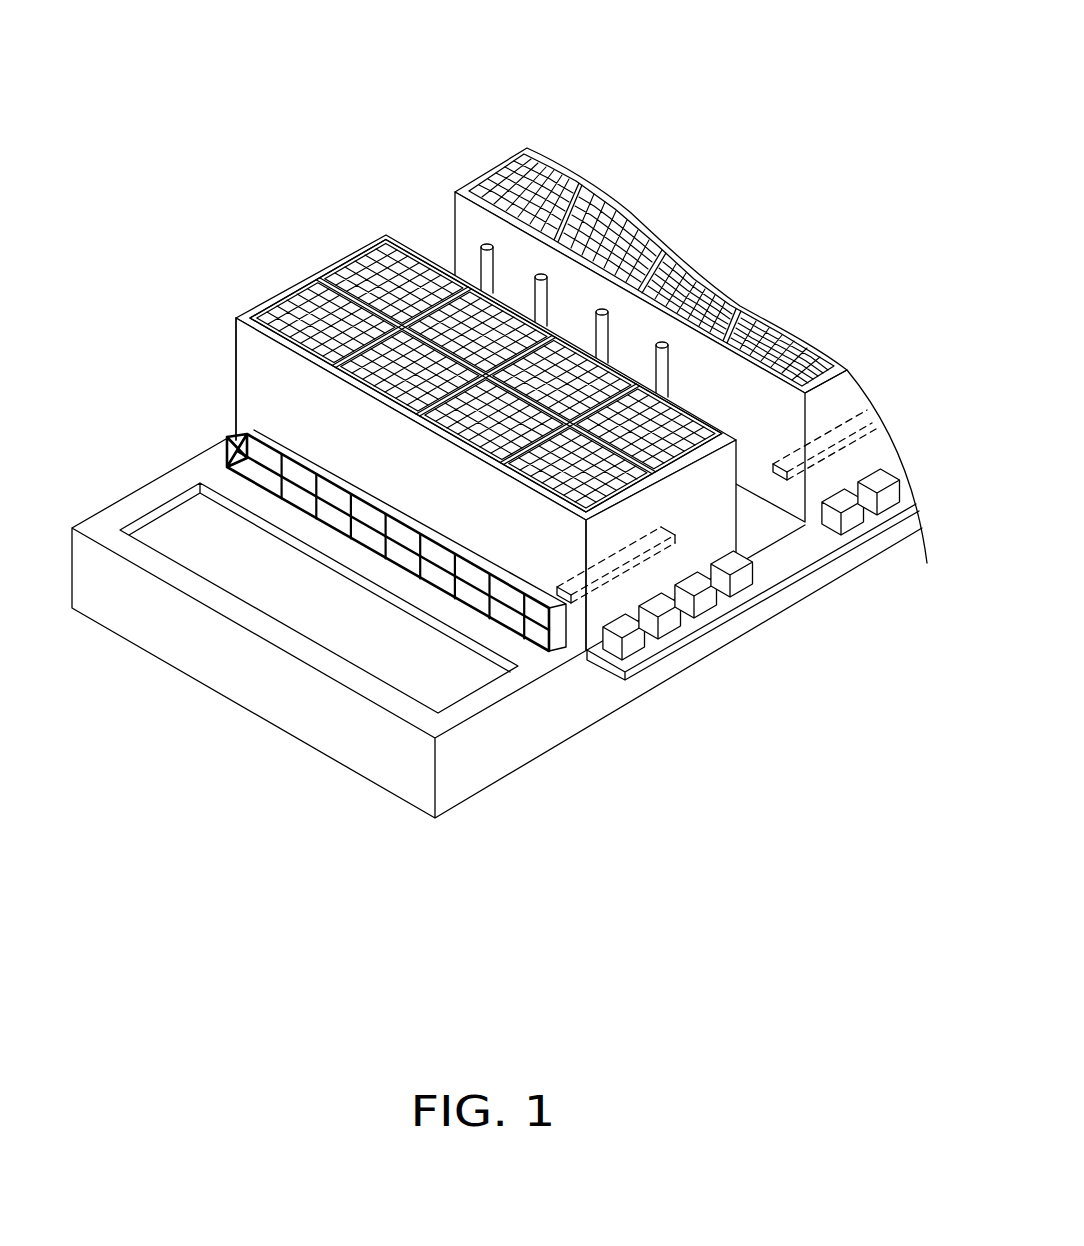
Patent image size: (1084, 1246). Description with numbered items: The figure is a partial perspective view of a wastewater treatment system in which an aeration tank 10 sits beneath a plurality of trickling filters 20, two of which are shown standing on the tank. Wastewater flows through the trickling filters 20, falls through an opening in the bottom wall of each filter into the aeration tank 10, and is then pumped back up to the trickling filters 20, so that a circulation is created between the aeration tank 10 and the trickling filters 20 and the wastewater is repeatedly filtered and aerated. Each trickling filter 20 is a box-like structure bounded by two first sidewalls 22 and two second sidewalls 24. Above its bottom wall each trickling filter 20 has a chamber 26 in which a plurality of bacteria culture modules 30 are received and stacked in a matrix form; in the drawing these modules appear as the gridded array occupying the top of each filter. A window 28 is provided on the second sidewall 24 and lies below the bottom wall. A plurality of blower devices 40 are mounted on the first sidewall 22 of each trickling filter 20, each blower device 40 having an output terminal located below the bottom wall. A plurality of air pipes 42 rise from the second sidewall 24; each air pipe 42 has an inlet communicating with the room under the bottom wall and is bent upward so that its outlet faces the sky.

The aeration tank 10 is at (550, 723).
The trickling filter 20 is at (526, 97).
The first sidewall 22 is at (277, 302).
The second sidewall 24 is at (418, 250).
The chamber 26 is at (350, 250).
The window 28 is at (528, 598).
The bacteria culture module 30 is at (287, 290).
The blower device 40 is at (633, 643).
The air pipe 42 is at (270, 428).